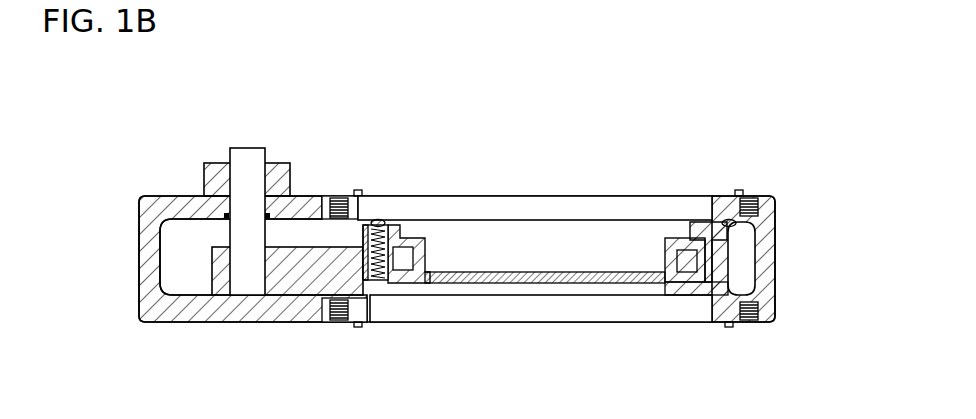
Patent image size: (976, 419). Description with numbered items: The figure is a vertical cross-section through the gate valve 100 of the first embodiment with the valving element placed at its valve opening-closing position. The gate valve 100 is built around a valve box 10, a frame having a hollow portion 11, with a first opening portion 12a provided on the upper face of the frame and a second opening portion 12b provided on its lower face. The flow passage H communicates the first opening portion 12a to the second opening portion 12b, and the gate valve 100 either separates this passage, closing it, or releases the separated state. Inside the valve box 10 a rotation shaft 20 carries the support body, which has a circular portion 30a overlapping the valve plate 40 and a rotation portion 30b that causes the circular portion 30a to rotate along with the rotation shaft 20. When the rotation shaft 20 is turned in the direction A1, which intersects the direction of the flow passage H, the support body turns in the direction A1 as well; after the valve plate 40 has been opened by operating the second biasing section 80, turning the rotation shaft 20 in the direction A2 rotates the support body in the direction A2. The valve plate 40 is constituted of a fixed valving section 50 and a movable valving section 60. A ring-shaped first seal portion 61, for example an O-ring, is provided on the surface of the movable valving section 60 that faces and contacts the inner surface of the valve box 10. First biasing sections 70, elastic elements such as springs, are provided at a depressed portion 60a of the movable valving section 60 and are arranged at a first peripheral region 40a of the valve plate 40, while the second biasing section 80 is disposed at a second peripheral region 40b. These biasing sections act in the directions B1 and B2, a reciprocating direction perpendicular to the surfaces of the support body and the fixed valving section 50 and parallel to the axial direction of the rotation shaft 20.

The gate valve 100 is at (778, 175).
The valve box 10 is at (148, 262).
The hollow portion 11 is at (187, 282).
The rotation shaft 20 is at (248, 285).
The circular portion 30a is at (428, 290).
The rotation portion 30b is at (305, 282).
The first opening portion 12a is at (502, 206).
The second opening portion 12b is at (602, 308).
The valve plate 40 is at (679, 185).
The first peripheral region 40a is at (386, 224).
The second peripheral region 40b is at (418, 230).
The fixed valving section 50 is at (675, 242).
The movable valving section 60 is at (707, 228).
The depressed portion 60a is at (382, 275).
The first seal portion 61 is at (377, 219).
The first biasing sections 70 is at (375, 270).
The second biasing section 80 is at (405, 268).
The flow passage H is at (545, 135).
The rotation direction A1 is at (178, 148).
The rotation direction A2 is at (192, 139).
The direction B1 is at (350, 243).
The direction B2 is at (330, 242).